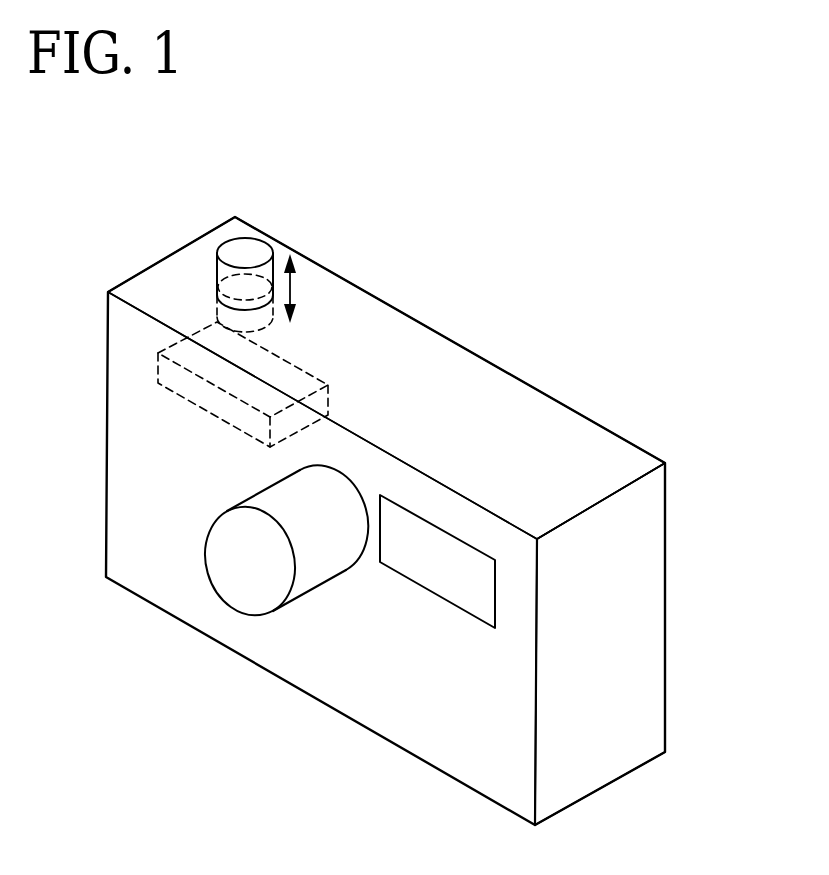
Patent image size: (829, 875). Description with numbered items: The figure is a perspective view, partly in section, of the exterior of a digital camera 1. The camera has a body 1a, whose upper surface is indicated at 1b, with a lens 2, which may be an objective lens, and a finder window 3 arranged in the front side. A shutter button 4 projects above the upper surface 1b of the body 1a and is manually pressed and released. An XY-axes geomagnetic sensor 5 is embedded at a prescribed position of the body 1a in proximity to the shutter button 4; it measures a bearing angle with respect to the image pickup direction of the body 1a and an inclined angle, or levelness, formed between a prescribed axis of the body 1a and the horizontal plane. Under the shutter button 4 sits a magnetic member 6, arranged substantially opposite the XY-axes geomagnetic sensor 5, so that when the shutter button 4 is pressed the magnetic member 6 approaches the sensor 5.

The digital camera 1 is at (674, 398).
The body 1a is at (648, 613).
The top surface of camera body 1b is at (463, 367).
The lens 2 is at (247, 593).
The finder window 3 is at (438, 578).
The shutter button 4 is at (244, 253).
The XY-axes geomagnetic sensor 5 is at (207, 398).
The magnetic member 6 is at (217, 308).